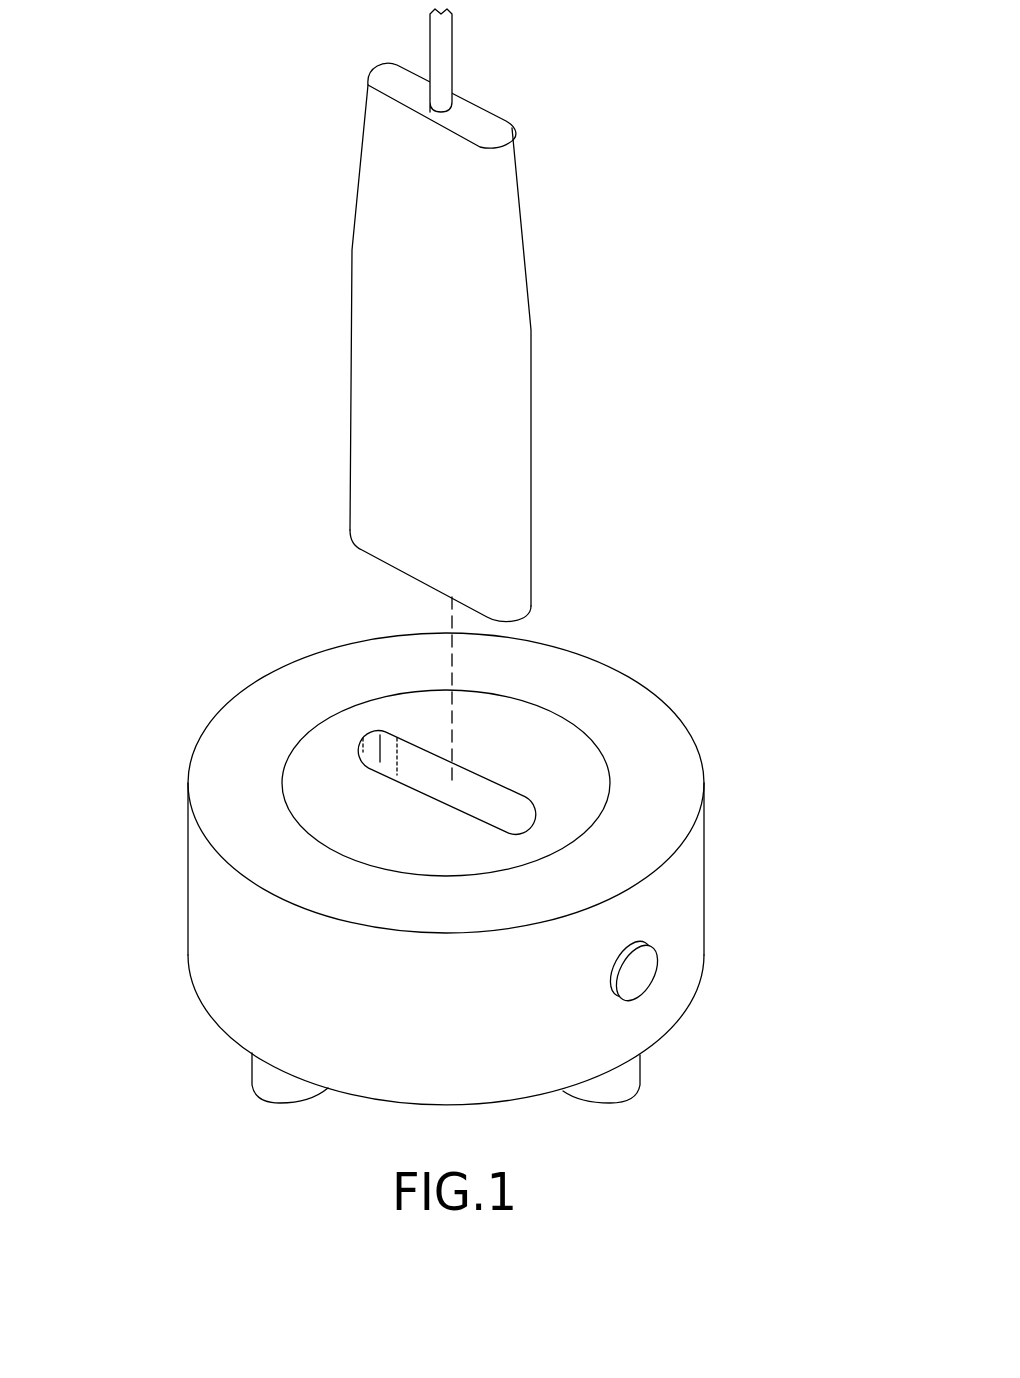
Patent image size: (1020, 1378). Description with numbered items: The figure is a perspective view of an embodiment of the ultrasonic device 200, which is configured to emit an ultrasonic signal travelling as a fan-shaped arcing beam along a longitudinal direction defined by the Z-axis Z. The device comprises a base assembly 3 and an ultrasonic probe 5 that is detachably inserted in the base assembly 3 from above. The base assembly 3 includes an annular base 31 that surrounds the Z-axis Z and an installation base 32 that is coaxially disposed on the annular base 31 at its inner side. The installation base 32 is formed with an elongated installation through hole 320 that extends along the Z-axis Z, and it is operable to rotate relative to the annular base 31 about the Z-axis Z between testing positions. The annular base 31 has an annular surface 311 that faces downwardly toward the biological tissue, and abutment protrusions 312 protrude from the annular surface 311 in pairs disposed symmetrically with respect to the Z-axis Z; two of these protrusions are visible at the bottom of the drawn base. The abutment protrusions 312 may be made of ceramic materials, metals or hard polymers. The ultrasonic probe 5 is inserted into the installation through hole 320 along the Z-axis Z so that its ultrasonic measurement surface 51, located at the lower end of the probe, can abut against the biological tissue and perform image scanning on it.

The ultrasonic device 200 is at (597, 327).
The ultrasonic probe 5 is at (512, 422).
The ultrasonic measurement surface 51 is at (366, 548).
The base assembly 3 is at (192, 802).
The annular base 31 is at (212, 893).
The annular surface 311 is at (212, 1016).
The abutment protrusions 312 is at (283, 1090).
The installation base 32 is at (547, 738).
The installation through hole 320 is at (510, 822).
The Z-axis Z is at (452, 677).